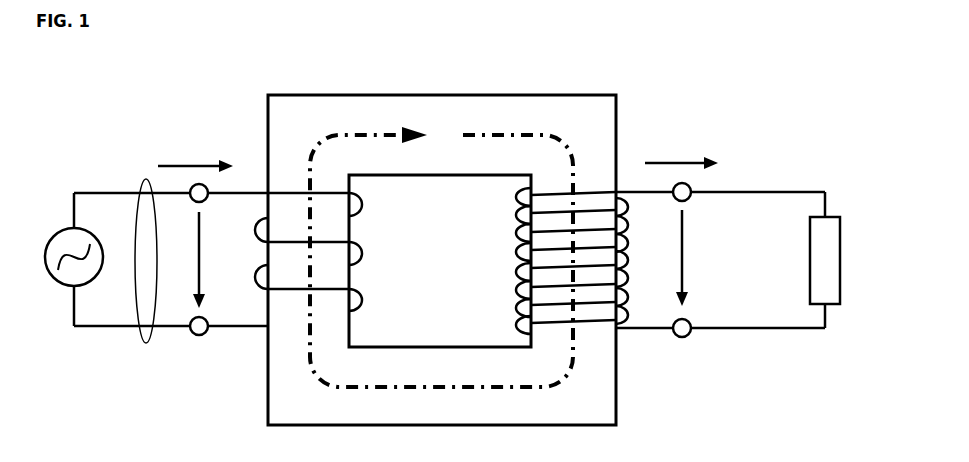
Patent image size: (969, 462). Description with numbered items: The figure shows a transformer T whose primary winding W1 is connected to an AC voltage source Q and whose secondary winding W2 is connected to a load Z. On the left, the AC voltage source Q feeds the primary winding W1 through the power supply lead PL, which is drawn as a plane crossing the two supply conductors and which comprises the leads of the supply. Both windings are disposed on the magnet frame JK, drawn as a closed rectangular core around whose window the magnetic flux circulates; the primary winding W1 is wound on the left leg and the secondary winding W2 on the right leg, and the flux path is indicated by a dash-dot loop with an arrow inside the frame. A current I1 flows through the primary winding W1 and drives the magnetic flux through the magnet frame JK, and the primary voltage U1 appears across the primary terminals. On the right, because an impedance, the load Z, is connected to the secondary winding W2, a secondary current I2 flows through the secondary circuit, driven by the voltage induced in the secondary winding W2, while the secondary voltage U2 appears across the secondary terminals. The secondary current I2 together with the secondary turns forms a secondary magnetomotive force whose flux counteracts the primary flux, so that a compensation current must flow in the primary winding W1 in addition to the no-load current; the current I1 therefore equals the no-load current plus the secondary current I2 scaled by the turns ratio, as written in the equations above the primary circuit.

The transformer T is at (550, 90).
The magnet frame JK is at (595, 387).
The primary winding W1 is at (242, 259).
The secondary winding W2 is at (549, 261).
The AC voltage source Q is at (84, 259).
The power supply lead PL is at (148, 332).
The current I1 is at (66, 126).
The primary voltage U1 is at (213, 260).
The secondary current I2 is at (681, 151).
The secondary voltage U2 is at (697, 258).
The load Z is at (769, 280).